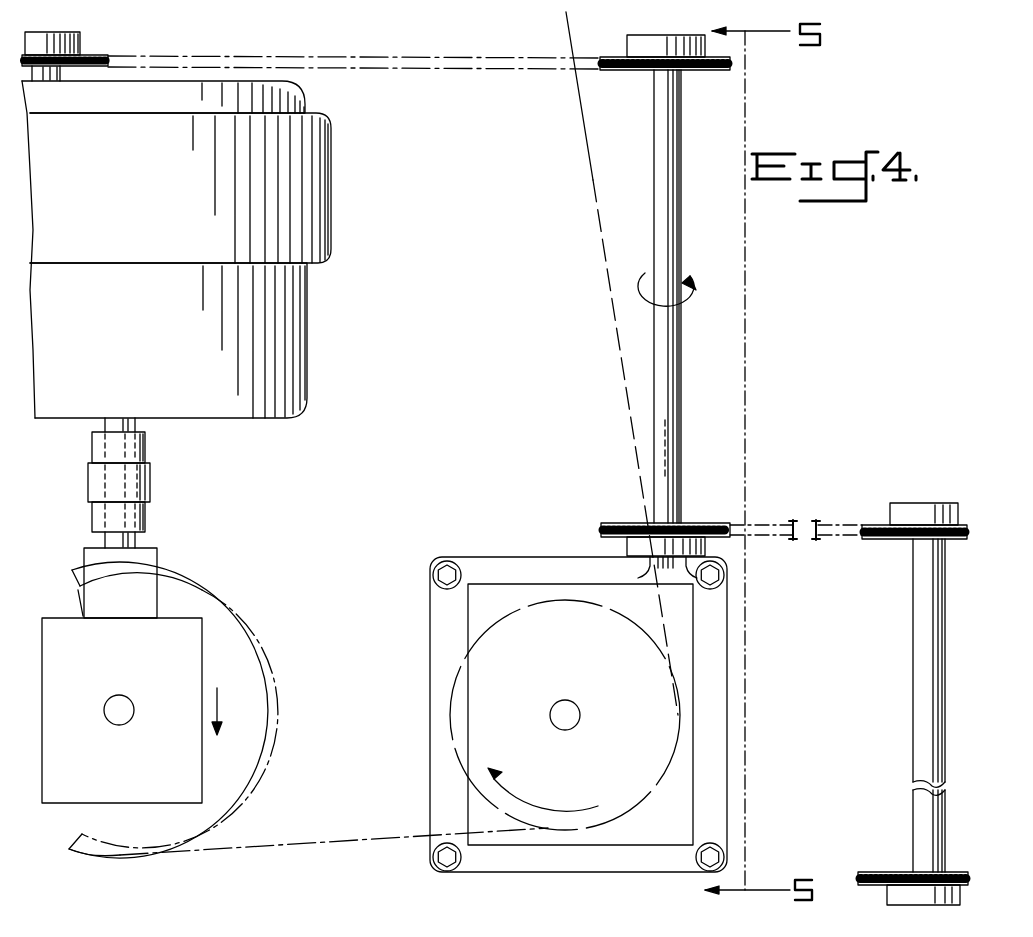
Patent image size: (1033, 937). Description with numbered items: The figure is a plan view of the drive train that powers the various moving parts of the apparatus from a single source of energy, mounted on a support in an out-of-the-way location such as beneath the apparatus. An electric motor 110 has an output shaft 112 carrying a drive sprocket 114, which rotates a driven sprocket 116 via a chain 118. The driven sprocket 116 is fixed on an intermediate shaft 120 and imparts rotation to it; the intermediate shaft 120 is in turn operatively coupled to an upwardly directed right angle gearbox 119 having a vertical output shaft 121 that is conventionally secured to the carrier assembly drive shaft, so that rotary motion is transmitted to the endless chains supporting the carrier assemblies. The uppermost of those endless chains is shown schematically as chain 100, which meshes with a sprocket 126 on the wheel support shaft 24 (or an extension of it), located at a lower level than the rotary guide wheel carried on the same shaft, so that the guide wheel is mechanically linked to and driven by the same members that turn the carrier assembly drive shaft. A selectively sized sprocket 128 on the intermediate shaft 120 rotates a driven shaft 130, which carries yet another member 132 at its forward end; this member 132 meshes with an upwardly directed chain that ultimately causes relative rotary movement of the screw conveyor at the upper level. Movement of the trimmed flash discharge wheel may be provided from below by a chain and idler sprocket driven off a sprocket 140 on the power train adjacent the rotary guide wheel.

The wheel support shaft 24 is at (130, 697).
The chain 100 is at (628, 395).
The electric motor 110 is at (336, 178).
The output shaft 112 is at (62, 76).
The drive sprocket 114 is at (98, 55).
The driven sprocket 116 is at (617, 72).
The chain 118 is at (420, 56).
The right angle gearbox 119 is at (622, 846).
The intermediate shaft 120 is at (683, 236).
The vertical output shaft 121 is at (572, 701).
The sprocket 126 is at (262, 762).
The sprocket 128 is at (713, 522).
The driven shaft 130 is at (913, 686).
The member 132 is at (864, 887).
The sprocket 140 is at (112, 845).